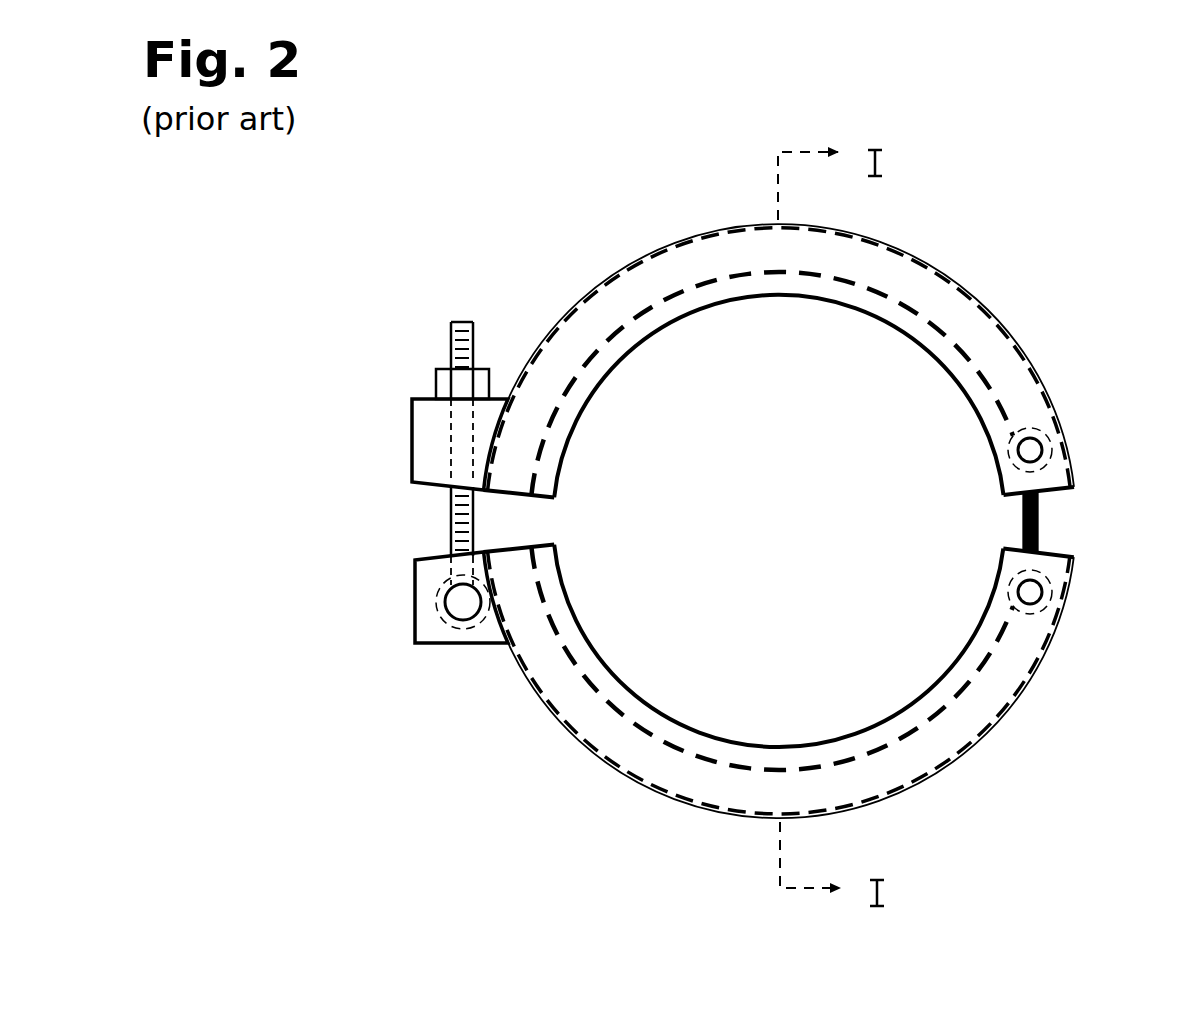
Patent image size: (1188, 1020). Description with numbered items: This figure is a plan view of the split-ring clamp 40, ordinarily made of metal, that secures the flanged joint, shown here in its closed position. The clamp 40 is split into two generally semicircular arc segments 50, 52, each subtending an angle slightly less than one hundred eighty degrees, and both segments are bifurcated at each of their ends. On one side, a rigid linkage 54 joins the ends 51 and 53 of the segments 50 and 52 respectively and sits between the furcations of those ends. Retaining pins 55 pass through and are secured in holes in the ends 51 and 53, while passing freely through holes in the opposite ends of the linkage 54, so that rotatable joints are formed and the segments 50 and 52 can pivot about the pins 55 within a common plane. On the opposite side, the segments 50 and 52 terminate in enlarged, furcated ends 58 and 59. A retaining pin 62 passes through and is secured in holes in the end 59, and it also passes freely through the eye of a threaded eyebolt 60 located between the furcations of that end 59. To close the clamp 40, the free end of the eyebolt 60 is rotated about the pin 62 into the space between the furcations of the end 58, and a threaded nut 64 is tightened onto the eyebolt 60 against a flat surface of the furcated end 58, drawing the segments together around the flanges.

The split-ring clamp 40 is at (738, 484).
The semicircular arc segment 50 is at (944, 265).
The end of segment 50 51 is at (1072, 470).
The semicircular arc segment 52 is at (1018, 698).
The end of segment 52 53 is at (1067, 566).
The rigid linkage 54 is at (1037, 525).
The retaining pins 55 is at (1058, 440).
The furcated end 58 is at (435, 447).
The furcated end 59 is at (425, 588).
The threaded eyebolt 60 is at (455, 530).
The retaining pin 62 is at (445, 627).
The threaded nut 64 is at (437, 388).